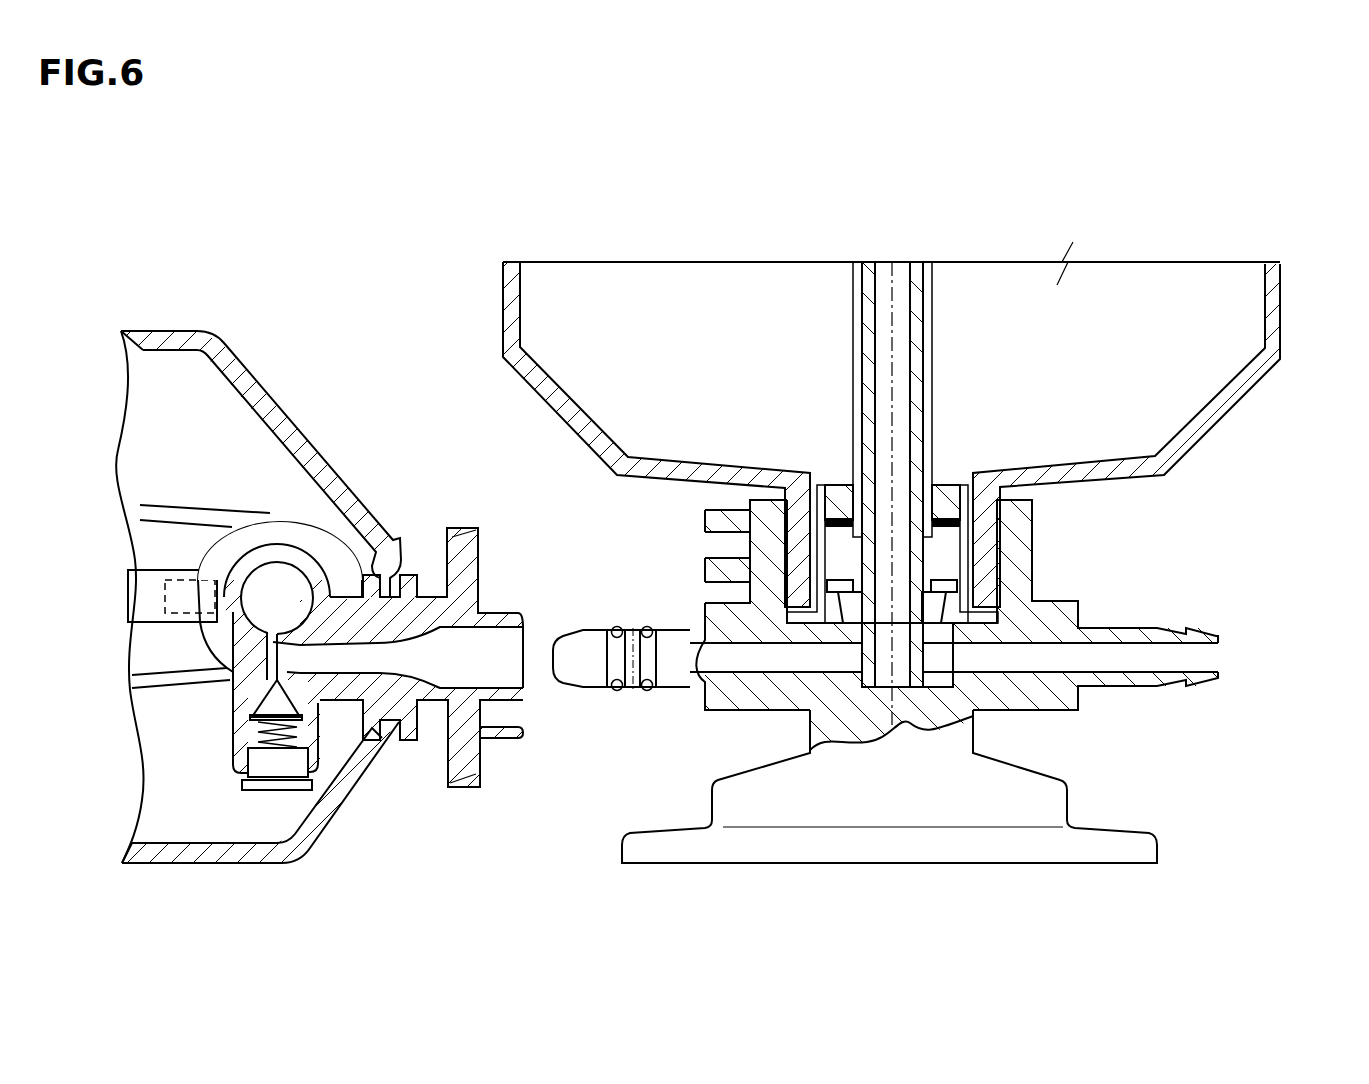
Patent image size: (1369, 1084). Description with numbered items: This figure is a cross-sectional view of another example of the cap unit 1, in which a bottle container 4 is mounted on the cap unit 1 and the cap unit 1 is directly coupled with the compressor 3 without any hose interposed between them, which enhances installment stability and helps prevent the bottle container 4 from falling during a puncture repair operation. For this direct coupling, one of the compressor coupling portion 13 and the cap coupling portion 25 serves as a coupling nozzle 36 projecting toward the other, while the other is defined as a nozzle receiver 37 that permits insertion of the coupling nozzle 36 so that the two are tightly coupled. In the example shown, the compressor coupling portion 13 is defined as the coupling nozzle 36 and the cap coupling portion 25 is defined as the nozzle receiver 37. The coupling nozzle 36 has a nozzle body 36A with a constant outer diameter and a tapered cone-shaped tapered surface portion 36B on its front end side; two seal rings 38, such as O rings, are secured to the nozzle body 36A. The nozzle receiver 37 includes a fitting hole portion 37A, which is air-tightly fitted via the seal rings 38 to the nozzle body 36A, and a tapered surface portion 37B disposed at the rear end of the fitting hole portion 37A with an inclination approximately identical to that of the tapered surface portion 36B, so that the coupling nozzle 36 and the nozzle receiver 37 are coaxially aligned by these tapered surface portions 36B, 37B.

The cap unit 1 is at (1166, 560).
The compressor 3 is at (283, 392).
The bottle container 4 is at (1237, 408).
The compressor coupling portion 13 is at (596, 693).
The coupling nozzle 36 is at (596, 693).
The nozzle body 36A is at (634, 616).
The tapered surface portion 36B is at (578, 628).
The seal ring 38 is at (617, 691).
The cap coupling portion 25 is at (429, 739).
The nozzle receiver 37 is at (429, 739).
The fitting hole portion 37A is at (490, 688).
The tapered surface portion 37B is at (400, 673).